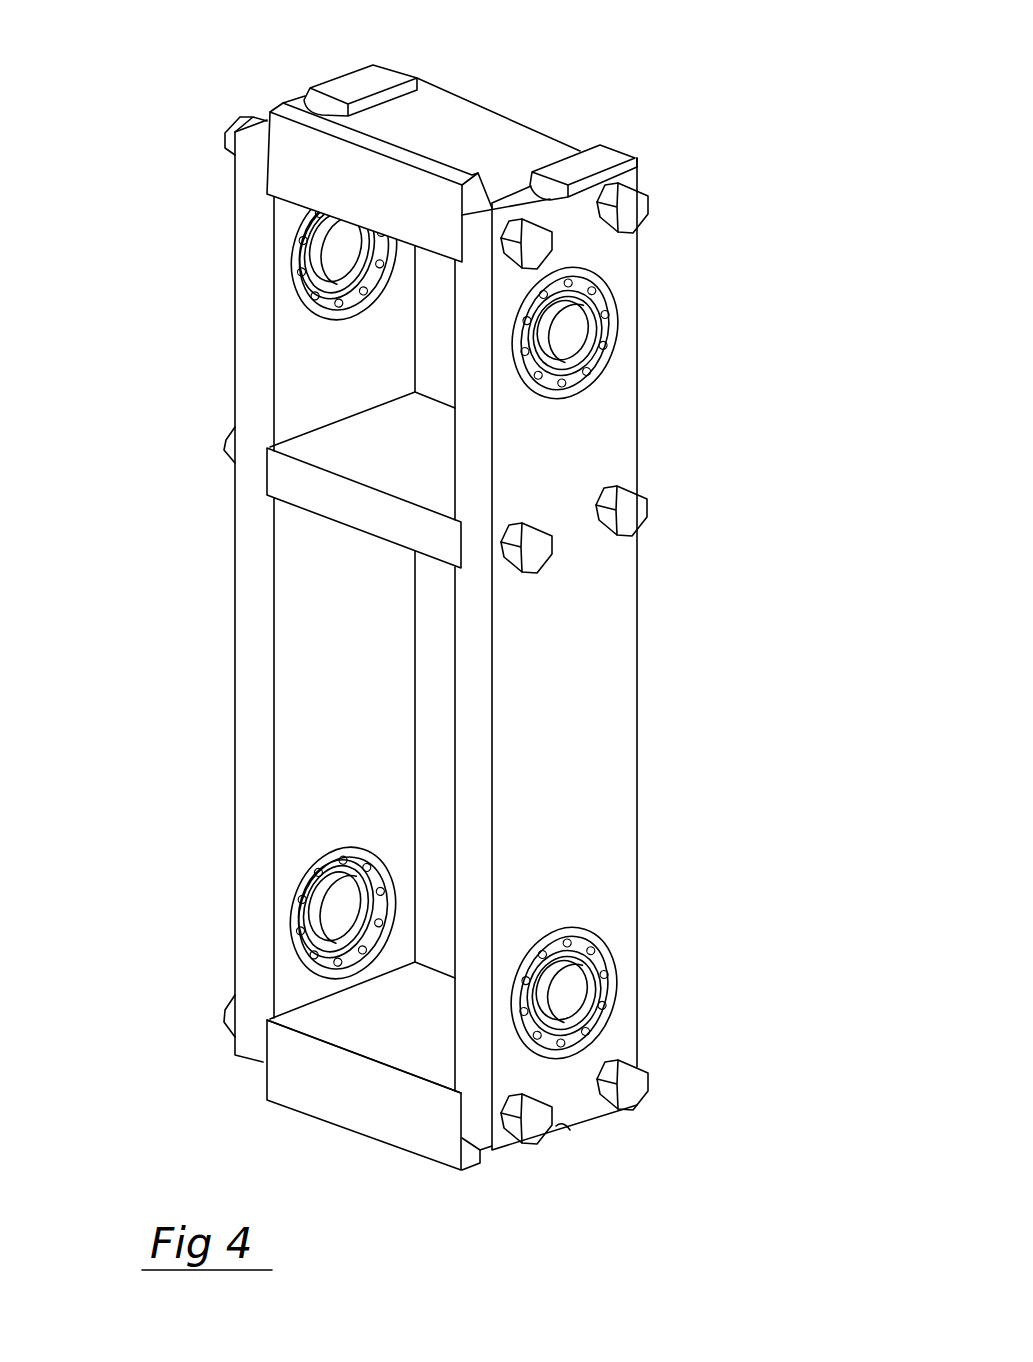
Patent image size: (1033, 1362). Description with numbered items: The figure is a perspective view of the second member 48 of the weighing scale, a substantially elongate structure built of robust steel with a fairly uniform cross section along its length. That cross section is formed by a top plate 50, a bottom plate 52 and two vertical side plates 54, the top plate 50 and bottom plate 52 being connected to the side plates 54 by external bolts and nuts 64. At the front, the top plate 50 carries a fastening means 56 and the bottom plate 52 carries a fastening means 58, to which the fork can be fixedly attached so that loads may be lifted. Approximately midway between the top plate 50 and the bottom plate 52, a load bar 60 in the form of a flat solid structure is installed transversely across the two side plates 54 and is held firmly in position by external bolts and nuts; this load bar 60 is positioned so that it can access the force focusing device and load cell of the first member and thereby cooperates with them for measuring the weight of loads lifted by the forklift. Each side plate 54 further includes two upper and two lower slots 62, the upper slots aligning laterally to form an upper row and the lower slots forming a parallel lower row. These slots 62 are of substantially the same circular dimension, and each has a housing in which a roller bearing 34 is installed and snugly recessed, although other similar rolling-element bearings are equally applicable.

The roller bearing 34 is at (585, 353).
The second member 48 is at (450, 84).
The top plate 50 is at (467, 132).
The bottom plate 52 is at (353, 1017).
The vertical side plate 54 is at (295, 625).
The fastening means 56 is at (288, 163).
The fastening means 58 is at (298, 1082).
The load bar 60 is at (352, 442).
The slot 62 is at (618, 308).
The bolts and nuts 64 is at (632, 208).